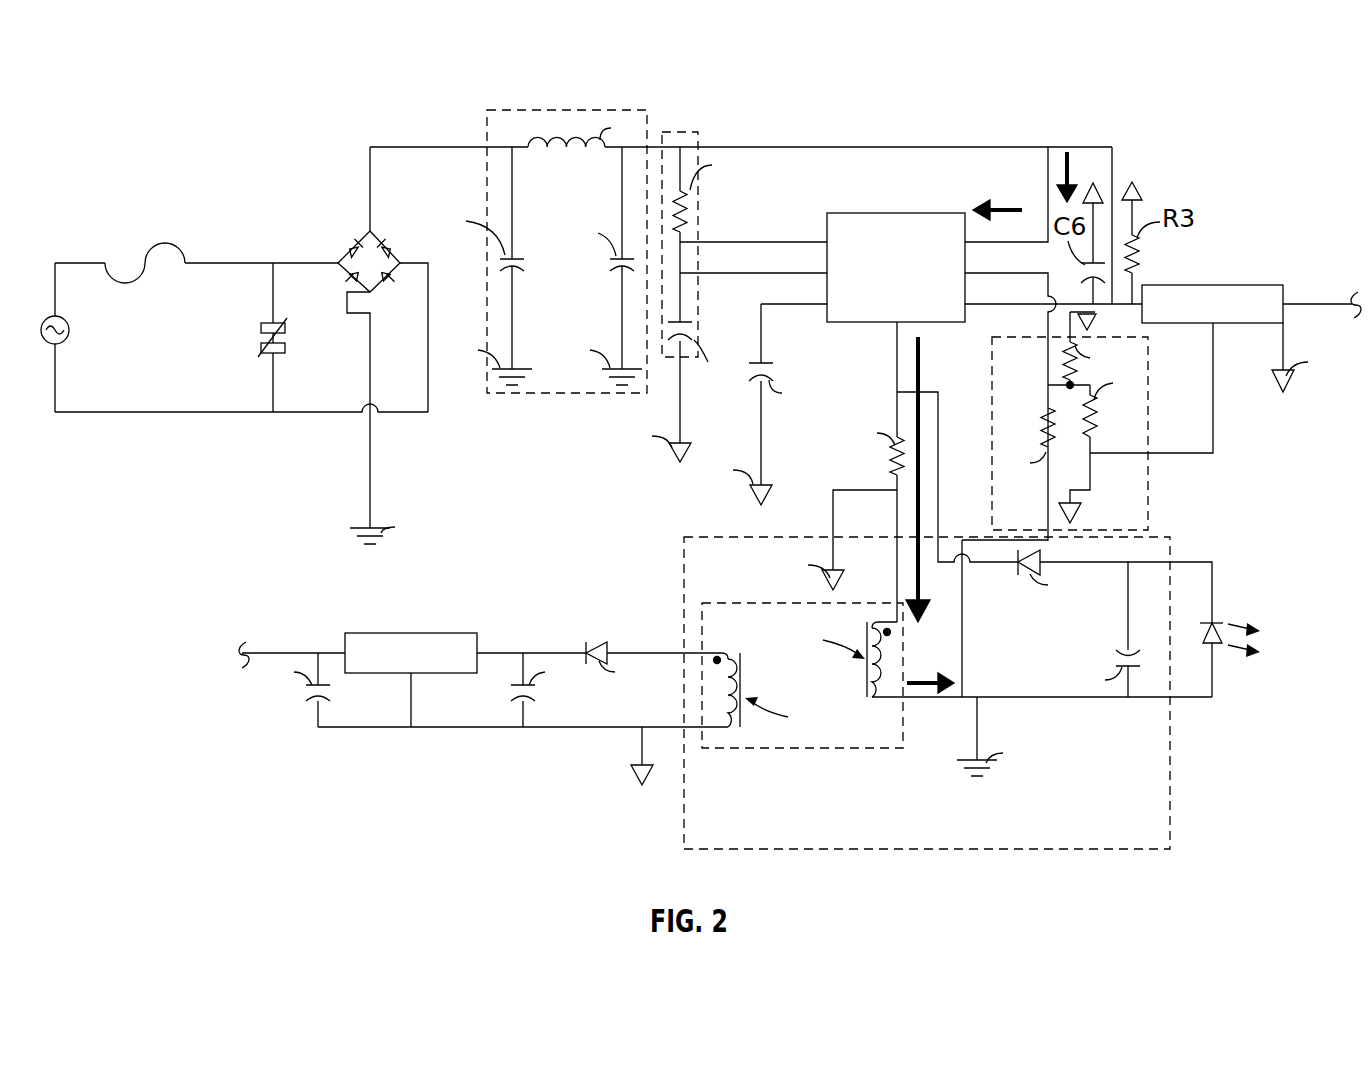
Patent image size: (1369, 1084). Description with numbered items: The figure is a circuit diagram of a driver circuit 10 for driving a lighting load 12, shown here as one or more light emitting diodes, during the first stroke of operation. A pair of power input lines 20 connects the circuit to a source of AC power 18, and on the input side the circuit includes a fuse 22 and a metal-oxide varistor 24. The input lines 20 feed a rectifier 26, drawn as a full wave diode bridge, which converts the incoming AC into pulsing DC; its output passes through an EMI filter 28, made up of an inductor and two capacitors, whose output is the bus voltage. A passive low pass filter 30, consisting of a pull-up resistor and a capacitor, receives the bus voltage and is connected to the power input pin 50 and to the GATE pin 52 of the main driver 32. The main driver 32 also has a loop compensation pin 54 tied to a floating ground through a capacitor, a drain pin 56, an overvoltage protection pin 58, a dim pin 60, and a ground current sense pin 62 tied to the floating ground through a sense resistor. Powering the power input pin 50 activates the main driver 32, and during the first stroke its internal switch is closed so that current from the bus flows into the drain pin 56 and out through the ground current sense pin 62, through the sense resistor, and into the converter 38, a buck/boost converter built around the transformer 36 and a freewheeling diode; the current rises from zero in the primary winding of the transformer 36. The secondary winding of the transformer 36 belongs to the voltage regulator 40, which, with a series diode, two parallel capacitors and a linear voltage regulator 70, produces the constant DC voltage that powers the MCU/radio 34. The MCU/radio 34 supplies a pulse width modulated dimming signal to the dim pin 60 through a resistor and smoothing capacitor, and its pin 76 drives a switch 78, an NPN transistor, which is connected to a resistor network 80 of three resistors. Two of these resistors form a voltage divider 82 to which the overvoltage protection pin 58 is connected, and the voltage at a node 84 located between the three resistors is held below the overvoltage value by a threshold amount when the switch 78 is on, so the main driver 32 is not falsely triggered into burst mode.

The driver circuit 10 is at (1114, 98).
The lighting load 12 is at (1234, 604).
The source of AC power 18 is at (65, 318).
The power input lines 20 is at (93, 260).
The fuse 22 is at (168, 260).
The metal-oxide varistor 24 is at (283, 302).
The rectifier 26 is at (398, 225).
The EMI filter 28 is at (537, 108).
The low pass filter 30 is at (697, 131).
The main driver 32 is at (860, 212).
The MCU/radio 34 is at (1240, 286).
The transformer 36 is at (894, 750).
The converter 38 is at (809, 700).
The voltage regulator 40 is at (402, 675).
The power input pin 50 is at (754, 240).
The GATE pin 52 is at (755, 275).
The loop compensation pin 54 is at (823, 305).
The drain pin 56 is at (1033, 242).
The overvoltage protection pin 58 is at (1018, 273).
The dim pin 60 is at (975, 308).
The ground current sense pin 62 is at (895, 408).
The linear voltage regulator 70 is at (433, 633).
The pin 76 is at (1215, 444).
The switch 78 is at (1115, 415).
The resistor network 80 is at (1101, 429).
The voltage divider 82 is at (1000, 358).
The node 84 is at (1066, 384).